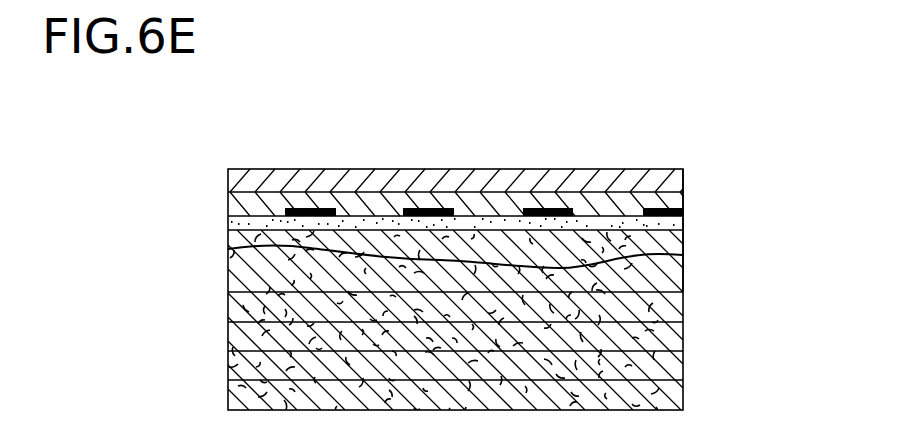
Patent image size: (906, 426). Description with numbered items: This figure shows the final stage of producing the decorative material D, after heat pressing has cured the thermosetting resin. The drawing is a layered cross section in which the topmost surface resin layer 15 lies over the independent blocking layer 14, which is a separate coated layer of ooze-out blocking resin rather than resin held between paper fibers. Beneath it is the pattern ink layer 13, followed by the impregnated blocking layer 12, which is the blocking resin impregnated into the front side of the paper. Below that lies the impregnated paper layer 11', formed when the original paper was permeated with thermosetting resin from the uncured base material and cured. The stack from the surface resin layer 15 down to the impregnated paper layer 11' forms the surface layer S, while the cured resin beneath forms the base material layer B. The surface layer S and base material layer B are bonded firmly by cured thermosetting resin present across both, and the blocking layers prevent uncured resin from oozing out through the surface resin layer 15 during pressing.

The decorative material D is at (249, 160).
The surface resin layer 15 is at (685, 180).
The independent blocking layer 14 is at (685, 203).
The pattern ink layer 13 is at (688, 208).
The impregnated blocking layer 12 is at (685, 246).
The impregnated paper layer 11' is at (501, 323).
The surface layer S is at (778, 143).
The base material layer B is at (692, 293).